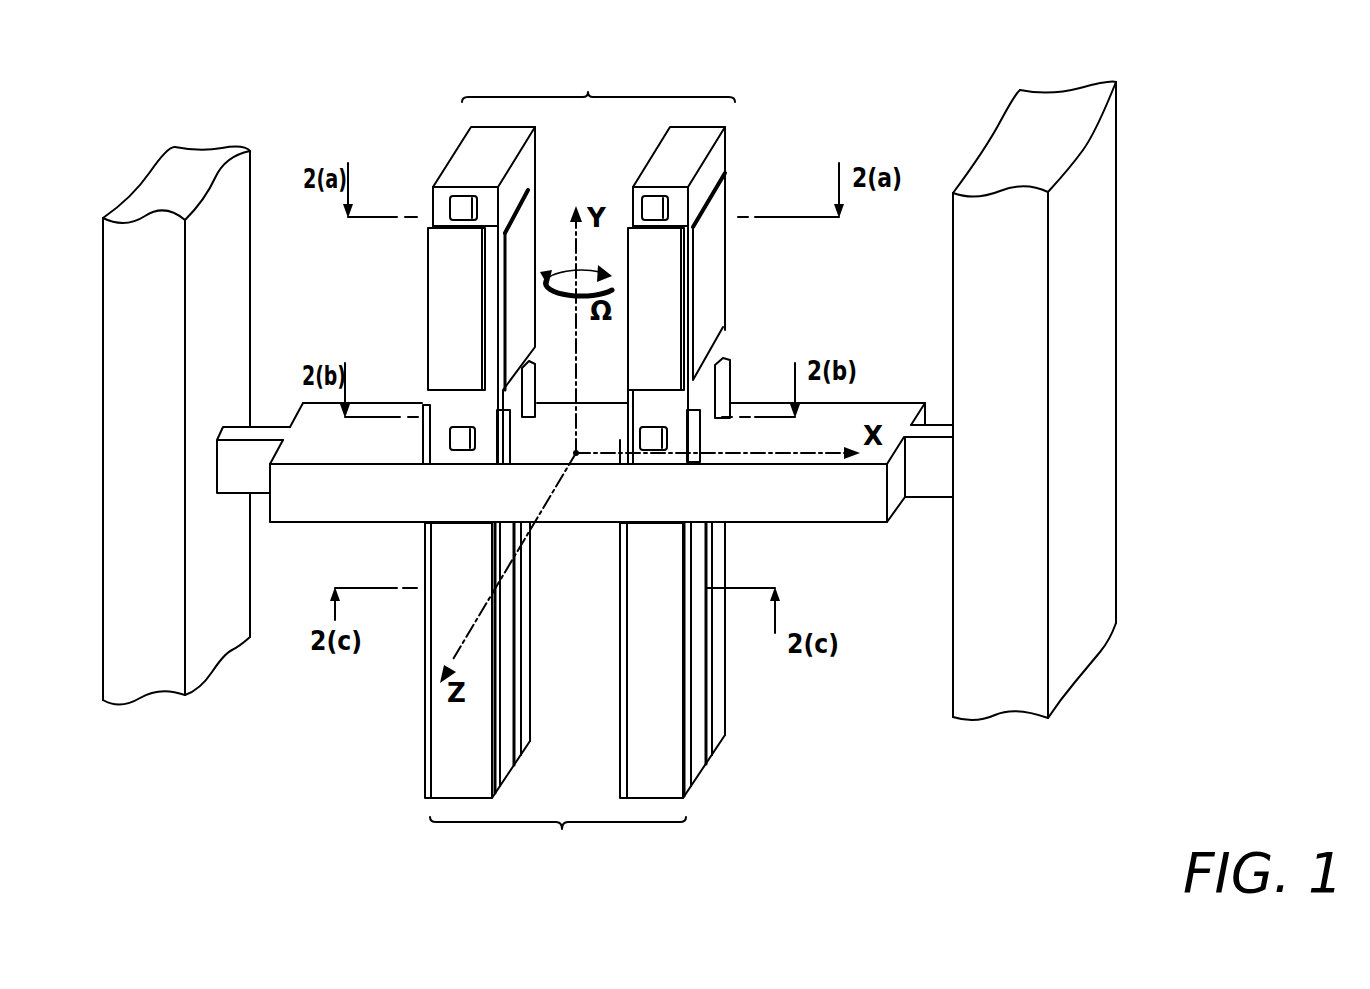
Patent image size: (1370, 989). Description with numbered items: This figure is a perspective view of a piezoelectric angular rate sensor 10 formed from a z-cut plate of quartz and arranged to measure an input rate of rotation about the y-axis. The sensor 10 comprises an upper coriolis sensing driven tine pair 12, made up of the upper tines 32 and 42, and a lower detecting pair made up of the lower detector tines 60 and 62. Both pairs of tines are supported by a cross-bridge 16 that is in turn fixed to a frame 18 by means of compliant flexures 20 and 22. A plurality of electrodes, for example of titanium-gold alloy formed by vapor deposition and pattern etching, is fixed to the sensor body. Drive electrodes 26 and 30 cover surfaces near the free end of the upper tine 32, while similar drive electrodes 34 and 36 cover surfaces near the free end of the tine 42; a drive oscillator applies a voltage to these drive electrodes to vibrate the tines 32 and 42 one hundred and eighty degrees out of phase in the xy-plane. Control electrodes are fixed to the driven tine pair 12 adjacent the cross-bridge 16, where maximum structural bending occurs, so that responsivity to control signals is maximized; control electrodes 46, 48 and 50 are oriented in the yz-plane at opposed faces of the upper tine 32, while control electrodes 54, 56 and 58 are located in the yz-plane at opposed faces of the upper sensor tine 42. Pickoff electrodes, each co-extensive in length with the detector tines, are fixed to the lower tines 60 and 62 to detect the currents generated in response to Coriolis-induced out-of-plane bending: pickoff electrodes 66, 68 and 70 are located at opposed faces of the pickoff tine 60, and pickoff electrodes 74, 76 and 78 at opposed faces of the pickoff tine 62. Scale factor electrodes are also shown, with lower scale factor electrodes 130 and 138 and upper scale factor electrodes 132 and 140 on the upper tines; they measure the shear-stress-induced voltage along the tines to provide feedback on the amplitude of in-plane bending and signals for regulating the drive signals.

The sensor 10 is at (797, 97).
The upper coriolis sensing driven tine pair 12 is at (598, 76).
The cross-bridge 16 is at (838, 523).
The frame 18 is at (110, 397).
The compliant flexure 20 is at (263, 427).
The compliant flexure 22 is at (933, 480).
The drive electrode 26 is at (527, 207).
The drive electrode 30 is at (428, 273).
The upper tine 32 is at (554, 160).
The drive electrode 34 is at (638, 362).
The drive electrode 36 is at (720, 270).
The upper tine 42 is at (743, 156).
The control electrode 46 is at (420, 440).
The control electrode 48 is at (535, 382).
The control electrode 50 is at (506, 427).
The control electrode 54 is at (620, 440).
The control electrode 56 is at (699, 442).
The control electrode 58 is at (728, 363).
The lower detector tine 60 is at (408, 669).
The lower detector tine 62 is at (742, 680).
The pickoff electrode 66 is at (423, 757).
The pickoff electrode 68 is at (527, 605).
The pickoff electrode 70 is at (503, 772).
The pickoff electrode 74 is at (618, 740).
The pickoff electrode 76 is at (727, 718).
The pickoff electrode 78 is at (698, 777).
The lower scale factor electrode 130 is at (462, 452).
The upper scale factor electrode 132 is at (450, 202).
The lower scale factor electrode 138 is at (652, 450).
The upper scale factor electrode 140 is at (663, 207).